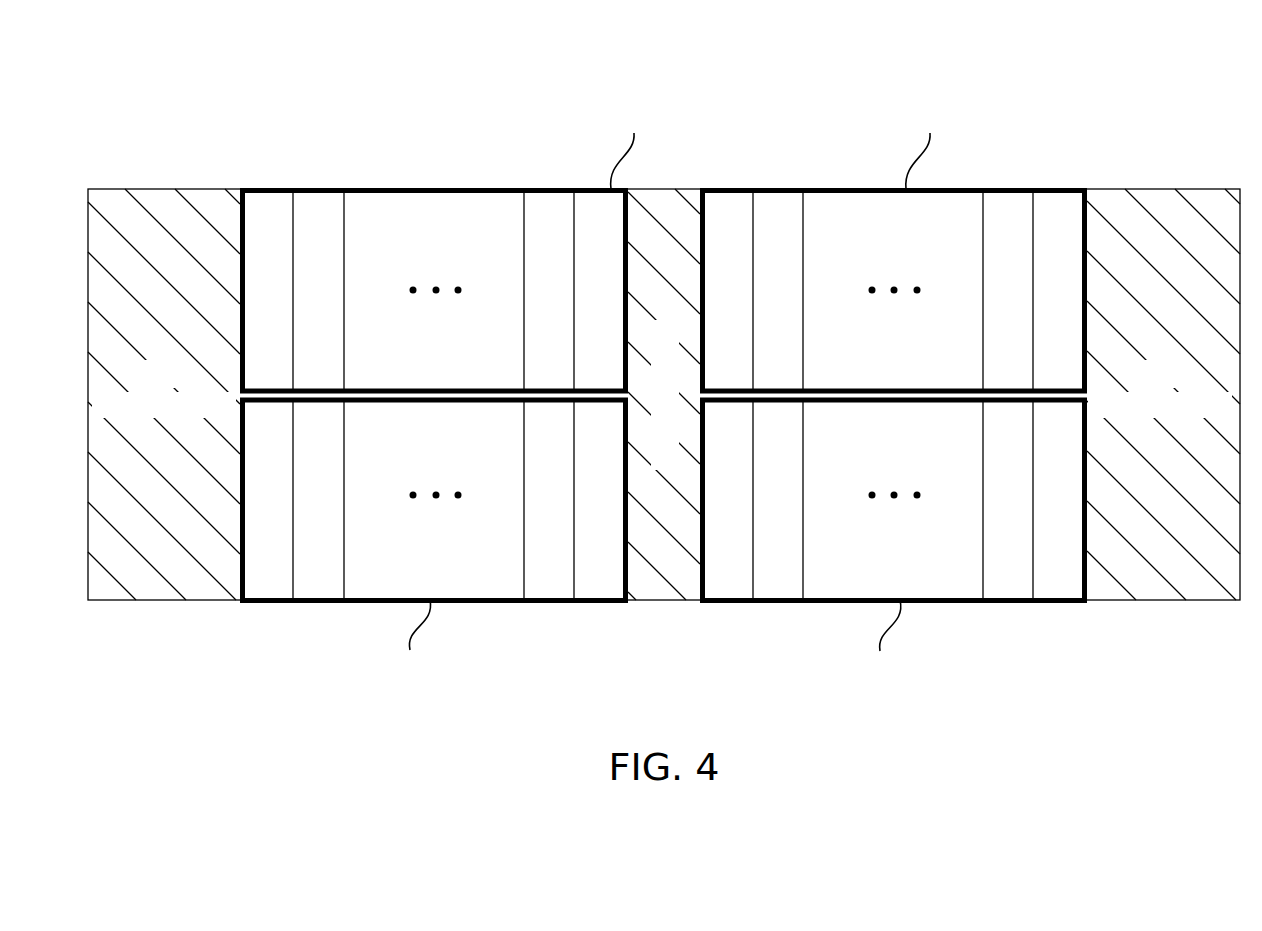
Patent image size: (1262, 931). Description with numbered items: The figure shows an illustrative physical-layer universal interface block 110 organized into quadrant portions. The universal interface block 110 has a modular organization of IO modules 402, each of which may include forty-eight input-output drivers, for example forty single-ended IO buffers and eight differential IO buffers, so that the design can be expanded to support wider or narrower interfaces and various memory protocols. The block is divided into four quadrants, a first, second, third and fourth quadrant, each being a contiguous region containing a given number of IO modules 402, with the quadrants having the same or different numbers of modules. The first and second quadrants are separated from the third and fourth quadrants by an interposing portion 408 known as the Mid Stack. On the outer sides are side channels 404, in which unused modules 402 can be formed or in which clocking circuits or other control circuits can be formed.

The universal interface block 110 is at (1137, 76).
The IO module 402 is at (666, 395).
The side channels 404 is at (88, 177).
The interposing portion 408 is at (628, 608).